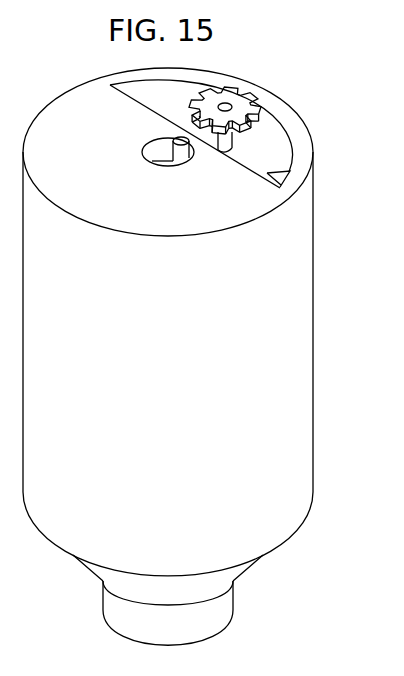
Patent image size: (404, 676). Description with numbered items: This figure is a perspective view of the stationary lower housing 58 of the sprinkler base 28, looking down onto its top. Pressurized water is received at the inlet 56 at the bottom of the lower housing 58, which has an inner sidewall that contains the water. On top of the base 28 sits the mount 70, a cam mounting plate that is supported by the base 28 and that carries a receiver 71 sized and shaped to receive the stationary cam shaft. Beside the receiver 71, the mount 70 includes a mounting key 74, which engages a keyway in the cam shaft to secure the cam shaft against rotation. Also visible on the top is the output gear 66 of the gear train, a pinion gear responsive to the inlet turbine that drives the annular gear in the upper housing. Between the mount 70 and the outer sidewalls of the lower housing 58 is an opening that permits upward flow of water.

The base 28 is at (313, 391).
The inlet 56 is at (220, 633).
The lower housing 58 is at (243, 573).
The output gear 66 is at (243, 98).
The mount 70 is at (107, 206).
The receiver 71 is at (163, 157).
The mounting key 74 is at (183, 153).